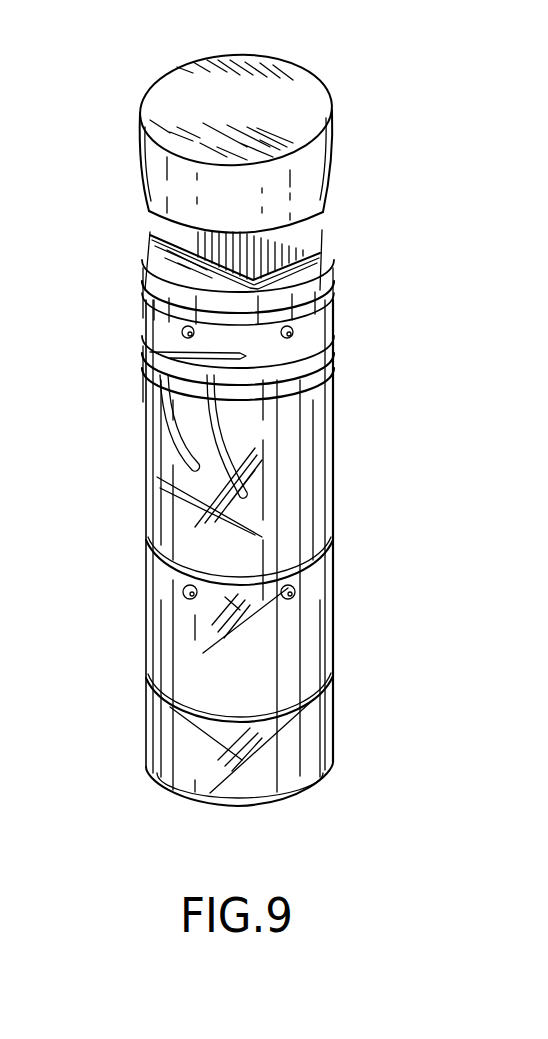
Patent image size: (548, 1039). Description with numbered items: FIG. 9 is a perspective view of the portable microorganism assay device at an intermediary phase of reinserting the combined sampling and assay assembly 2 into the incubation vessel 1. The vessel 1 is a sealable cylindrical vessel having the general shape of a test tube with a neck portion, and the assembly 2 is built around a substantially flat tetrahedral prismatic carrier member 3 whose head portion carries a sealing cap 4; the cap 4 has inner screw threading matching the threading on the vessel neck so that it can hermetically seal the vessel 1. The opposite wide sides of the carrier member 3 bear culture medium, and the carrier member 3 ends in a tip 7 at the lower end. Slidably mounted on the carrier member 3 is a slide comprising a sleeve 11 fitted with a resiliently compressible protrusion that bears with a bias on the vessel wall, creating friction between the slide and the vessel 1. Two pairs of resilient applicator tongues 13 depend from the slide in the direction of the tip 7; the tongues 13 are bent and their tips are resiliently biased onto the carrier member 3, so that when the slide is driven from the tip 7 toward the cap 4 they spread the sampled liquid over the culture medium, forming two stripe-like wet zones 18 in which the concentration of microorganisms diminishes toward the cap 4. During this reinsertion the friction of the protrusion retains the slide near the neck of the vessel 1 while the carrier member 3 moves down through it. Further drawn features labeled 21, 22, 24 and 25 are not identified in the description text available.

The sealable cylindrical vessel 1 is at (143, 499).
The combined sampling and assay assembly 2 is at (347, 405).
The carrier member 3 is at (290, 512).
The sealing cap 4 is at (165, 100).
The tip 7 is at (283, 648).
The sleeve 11 is at (150, 268).
The resilient applicator tongues 13 is at (208, 432).
The stripe-like wet zones 18 is at (188, 488).
The intermediate ring 21 is at (170, 577).
The eyelets 22 is at (298, 600).
The collar 24 is at (313, 226).
The lower ring 25 is at (317, 700).